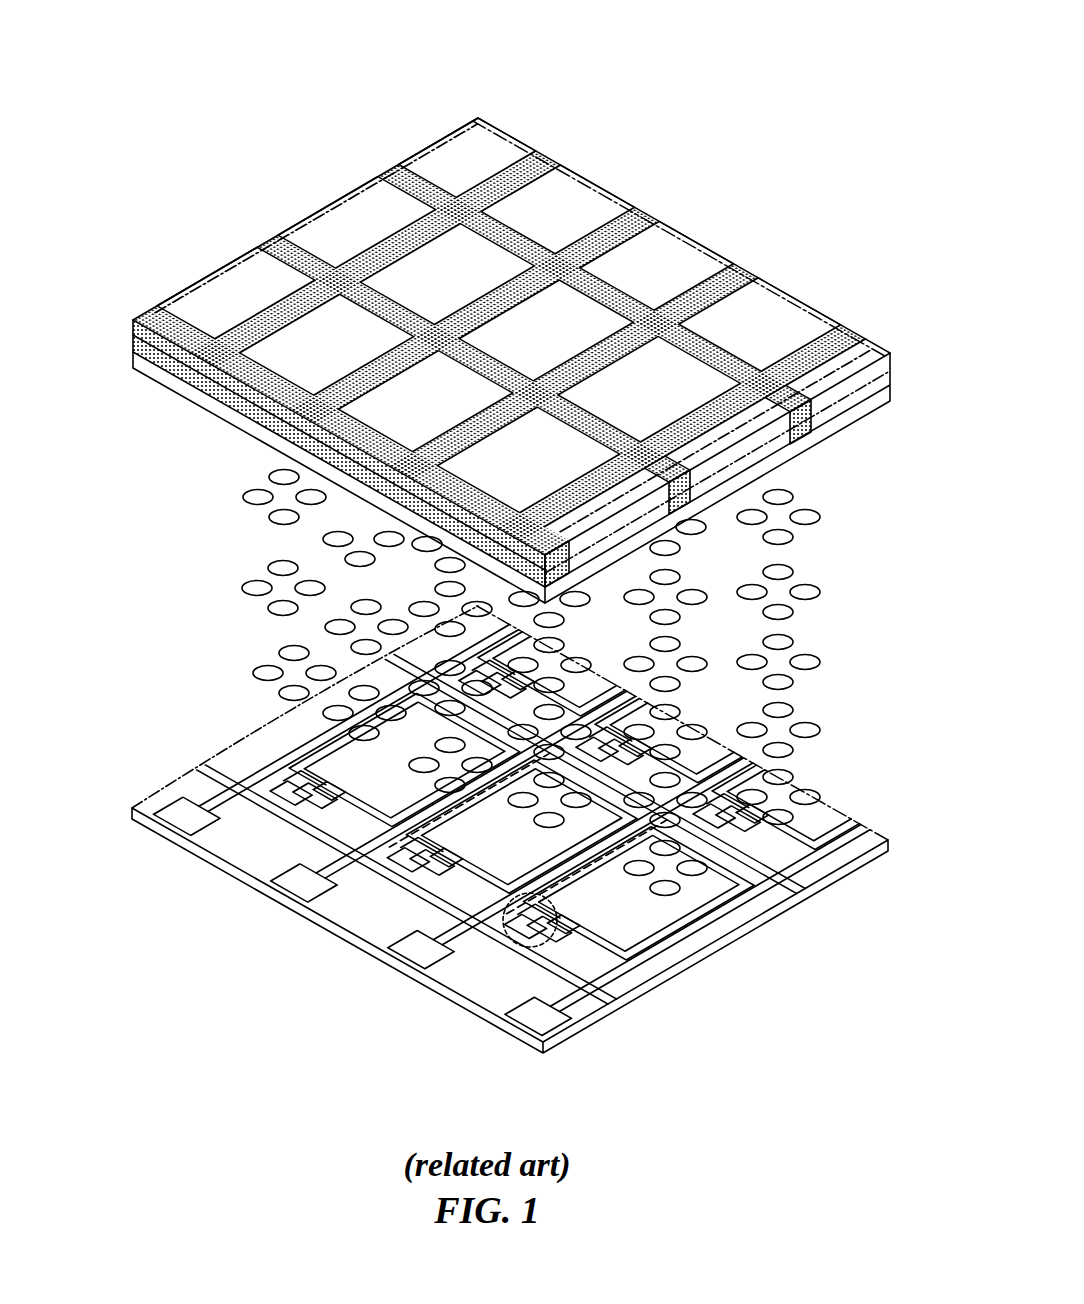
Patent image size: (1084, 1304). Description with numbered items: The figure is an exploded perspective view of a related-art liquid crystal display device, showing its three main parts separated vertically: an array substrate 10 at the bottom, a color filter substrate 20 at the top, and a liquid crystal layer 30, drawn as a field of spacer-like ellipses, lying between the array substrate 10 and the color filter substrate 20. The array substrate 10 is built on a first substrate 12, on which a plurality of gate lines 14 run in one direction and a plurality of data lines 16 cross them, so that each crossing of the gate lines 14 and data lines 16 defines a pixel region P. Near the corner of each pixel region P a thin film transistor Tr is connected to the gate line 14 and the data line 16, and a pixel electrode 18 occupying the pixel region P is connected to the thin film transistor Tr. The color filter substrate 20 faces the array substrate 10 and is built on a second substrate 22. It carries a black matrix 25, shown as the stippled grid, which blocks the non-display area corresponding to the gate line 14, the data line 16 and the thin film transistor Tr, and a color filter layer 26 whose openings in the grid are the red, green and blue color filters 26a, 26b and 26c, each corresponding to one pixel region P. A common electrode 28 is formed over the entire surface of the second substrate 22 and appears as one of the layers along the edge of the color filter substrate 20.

The color filter substrate 20 is at (242, 180).
The second substrate 22 is at (133, 328).
The common electrode 28 is at (133, 360).
The black matrix 25 is at (735, 282).
The color filter layer 26 is at (498, 315).
The red color filter 26a is at (467, 157).
The green color filter 26b is at (558, 209).
The blue color filter 26c is at (680, 256).
The liquid crystal layer 30 is at (851, 495).
The array substrate 10 is at (212, 710).
The first substrate 12 is at (532, 1046).
The gate line 14 is at (501, 829).
The data line 16 is at (518, 825).
The pixel electrode 18 is at (521, 826).
The pixel region P is at (521, 826).
The thin film transistor Tr is at (542, 925).